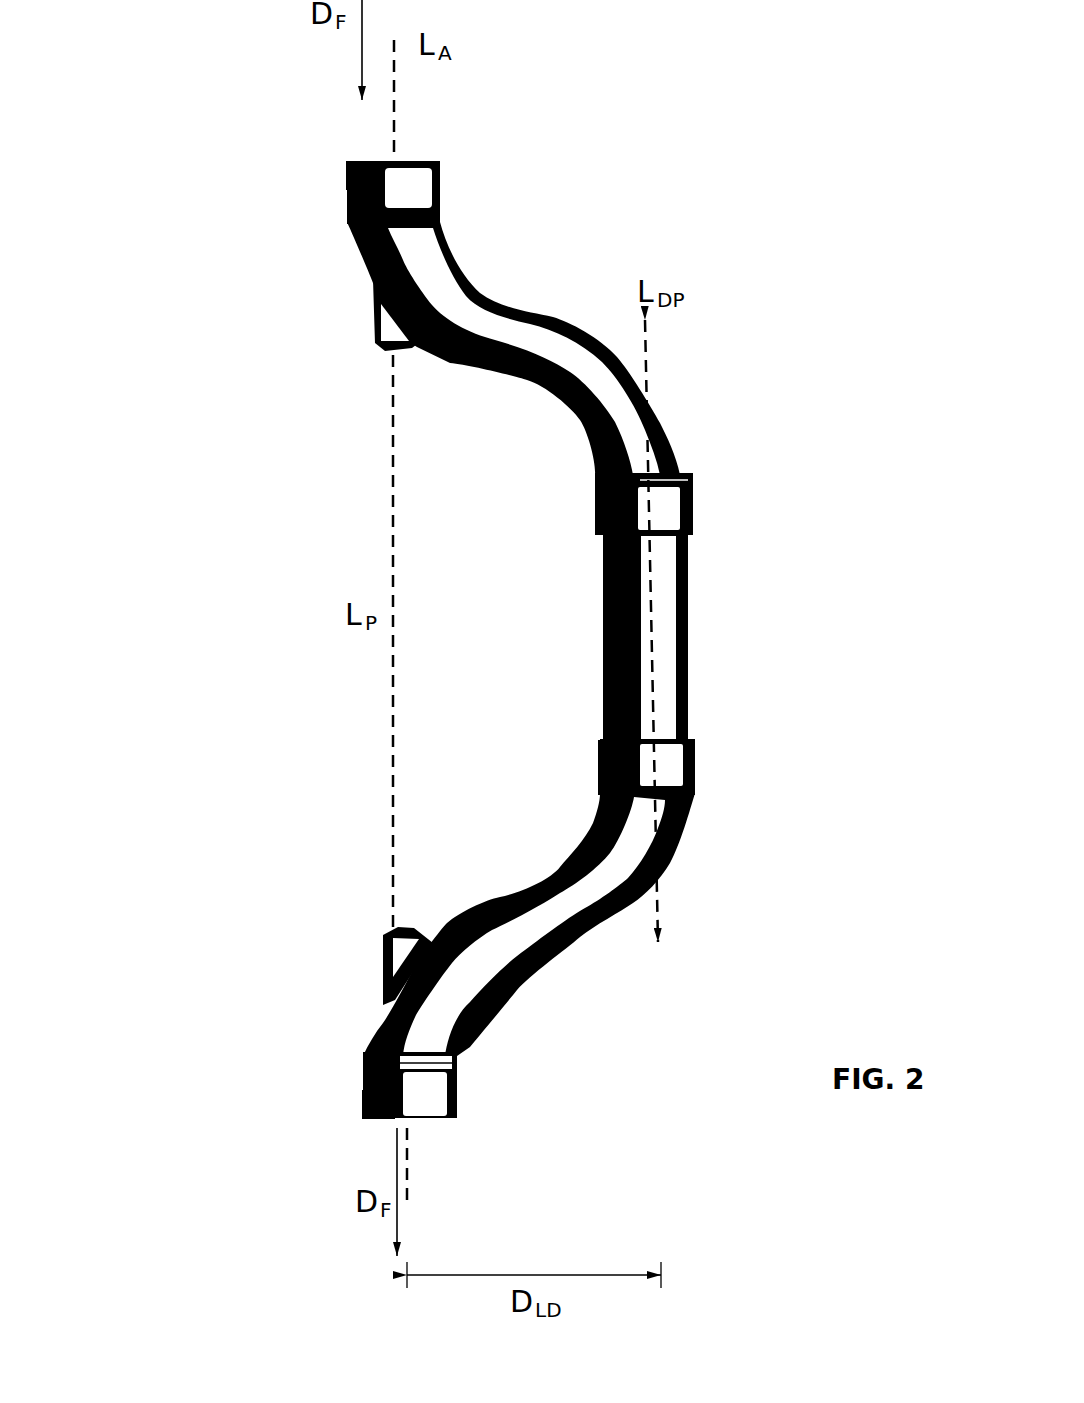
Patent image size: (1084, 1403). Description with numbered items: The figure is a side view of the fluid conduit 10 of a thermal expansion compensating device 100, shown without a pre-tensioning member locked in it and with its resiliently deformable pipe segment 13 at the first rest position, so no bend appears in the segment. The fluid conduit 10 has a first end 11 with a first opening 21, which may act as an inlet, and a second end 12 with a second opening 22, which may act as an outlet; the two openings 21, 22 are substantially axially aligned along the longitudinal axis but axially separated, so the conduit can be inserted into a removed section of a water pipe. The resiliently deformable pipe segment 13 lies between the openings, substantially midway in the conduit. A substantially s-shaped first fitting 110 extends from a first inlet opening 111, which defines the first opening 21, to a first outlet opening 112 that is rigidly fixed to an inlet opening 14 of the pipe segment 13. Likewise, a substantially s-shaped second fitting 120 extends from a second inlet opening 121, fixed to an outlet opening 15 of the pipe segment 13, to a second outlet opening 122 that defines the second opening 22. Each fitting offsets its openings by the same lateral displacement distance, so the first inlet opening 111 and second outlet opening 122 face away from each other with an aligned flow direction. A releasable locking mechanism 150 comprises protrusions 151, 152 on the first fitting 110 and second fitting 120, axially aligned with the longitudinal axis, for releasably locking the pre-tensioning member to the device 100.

The fluid conduit 10 is at (503, 403).
The first end 11 is at (423, 150).
The second end 12 is at (438, 1122).
The resiliently deformable pipe segment 13 is at (696, 612).
The inlet opening of the resiliently deformable pipe segment 14 is at (688, 533).
The outlet opening of the resiliently deformable pipe segment 15 is at (697, 728).
The first opening 21 is at (372, 152).
The second opening 22 is at (380, 1127).
The thermal expansion compensating device 100 is at (722, 404).
The first fitting 110 is at (548, 262).
The first inlet opening 111 is at (443, 160).
The first outlet opening 112 is at (696, 487).
The second fitting 120 is at (557, 843).
The second inlet opening 121 is at (698, 760).
The second outlet opening 122 is at (460, 1085).
The releasable locking mechanism 150 is at (365, 365).
The protrusion 151 is at (373, 333).
The protrusion 152 is at (383, 945).